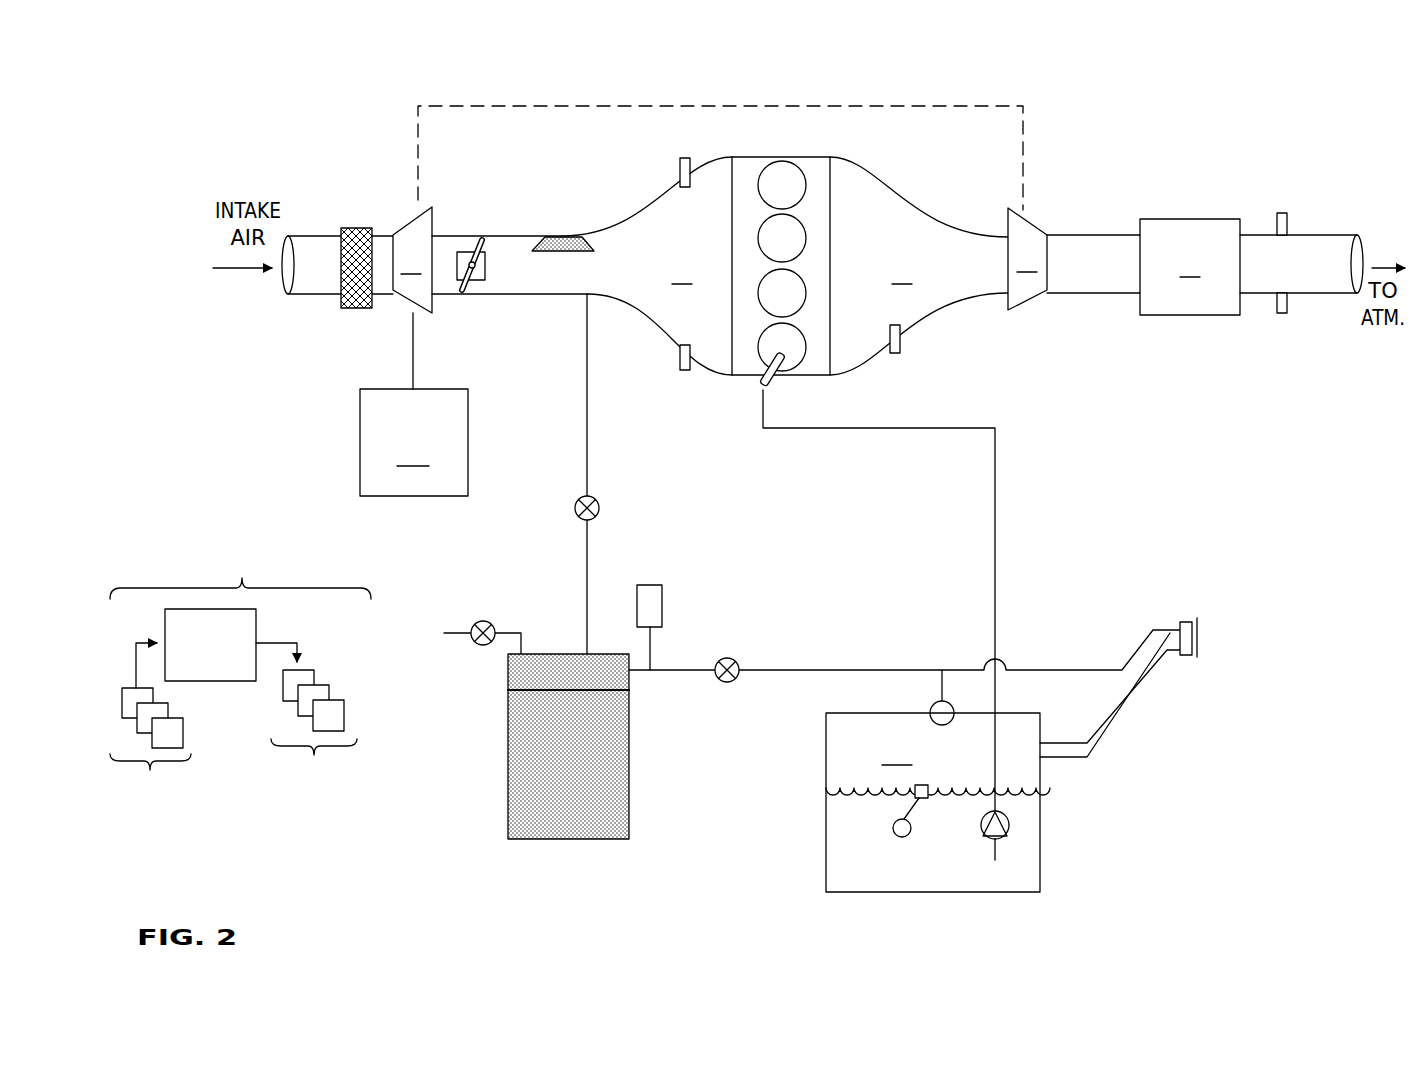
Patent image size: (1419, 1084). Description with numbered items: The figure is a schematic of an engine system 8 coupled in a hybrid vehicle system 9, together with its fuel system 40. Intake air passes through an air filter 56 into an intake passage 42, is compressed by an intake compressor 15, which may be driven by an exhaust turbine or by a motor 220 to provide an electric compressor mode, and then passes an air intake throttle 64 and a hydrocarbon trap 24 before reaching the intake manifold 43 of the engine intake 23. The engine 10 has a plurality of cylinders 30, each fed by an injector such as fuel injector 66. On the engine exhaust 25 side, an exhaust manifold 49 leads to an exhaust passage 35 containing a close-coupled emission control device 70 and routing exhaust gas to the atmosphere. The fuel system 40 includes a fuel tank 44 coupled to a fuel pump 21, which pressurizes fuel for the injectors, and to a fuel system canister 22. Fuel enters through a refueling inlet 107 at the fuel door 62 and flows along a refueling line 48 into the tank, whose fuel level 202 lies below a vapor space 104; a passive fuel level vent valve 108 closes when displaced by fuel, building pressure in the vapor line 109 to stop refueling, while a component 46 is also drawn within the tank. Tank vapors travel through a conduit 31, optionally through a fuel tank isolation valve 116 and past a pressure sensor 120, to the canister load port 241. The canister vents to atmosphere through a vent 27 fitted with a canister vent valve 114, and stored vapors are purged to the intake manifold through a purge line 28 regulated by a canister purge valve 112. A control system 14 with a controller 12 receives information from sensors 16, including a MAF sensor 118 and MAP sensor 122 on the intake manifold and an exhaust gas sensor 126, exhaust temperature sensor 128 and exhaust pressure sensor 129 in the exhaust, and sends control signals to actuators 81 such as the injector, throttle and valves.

The hybrid vehicle system 9 is at (150, 92).
The engine system 8 is at (1081, 128).
The engine 10 is at (832, 247).
The controller 12 is at (210, 645).
The control system 14 is at (240, 672).
The intake compressor 15 is at (412, 260).
The sensors 16 is at (1027, 259).
The fuel pump 21 is at (1009, 829).
The fuel system canister 22 is at (563, 746).
The engine intake 23 is at (621, 204).
The hydrocarbon trap 24 is at (563, 237).
The engine exhaust 25 is at (946, 196).
The vent 27 is at (450, 633).
The purge line 28 is at (588, 441).
The cylinders 30 is at (804, 179).
The conduit 31 is at (845, 670).
The exhaust passage 35 is at (1340, 235).
The fuel system 40 is at (952, 804).
The intake passage 42 is at (318, 296).
The intake manifold 43 is at (647, 266).
The fuel tank 44 is at (826, 743).
The level sensor 46 is at (930, 798).
The refueling line 48 is at (1110, 725).
The exhaust manifold 49 is at (919, 266).
The air filter 56 is at (356, 228).
The fuel door 62 is at (1200, 639).
The air intake throttle 64 is at (486, 272).
The fuel injector 66 is at (774, 377).
The emission control device 70 is at (1190, 267).
The actuators 81 is at (306, 718).
The vapor space 104 is at (897, 754).
The refueling inlet 107 is at (1186, 621).
The fuel level vent valve 108 is at (935, 703).
The vapor line 109 is at (1136, 653).
The canister purge valve 112 is at (597, 508).
The canister vent valve 114 is at (491, 623).
The fuel tank isolation valve 116 is at (735, 660).
The MAF sensor 118 is at (680, 348).
The pressure sensor 120 is at (662, 593).
The MAP sensor 122 is at (680, 161).
The exhaust gas sensor 126 is at (900, 337).
The exhaust temperature sensor 128 is at (1283, 313).
The exhaust pressure sensor 129 is at (1283, 213).
The fuel level 202 is at (840, 792).
The motor 220 is at (414, 404).
The load port 241 is at (508, 668).